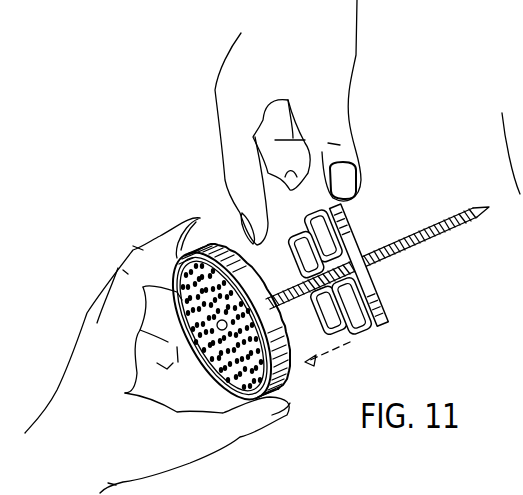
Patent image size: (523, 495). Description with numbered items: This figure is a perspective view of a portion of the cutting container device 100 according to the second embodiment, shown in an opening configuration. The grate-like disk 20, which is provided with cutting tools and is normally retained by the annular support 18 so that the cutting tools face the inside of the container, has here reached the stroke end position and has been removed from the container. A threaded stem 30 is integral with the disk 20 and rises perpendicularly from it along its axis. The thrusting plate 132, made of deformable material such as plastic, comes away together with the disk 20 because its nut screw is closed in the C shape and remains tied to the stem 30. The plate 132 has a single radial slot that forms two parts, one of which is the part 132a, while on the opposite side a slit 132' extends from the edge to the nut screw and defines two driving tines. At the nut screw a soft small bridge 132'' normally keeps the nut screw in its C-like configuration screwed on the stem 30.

The cutting container device 100 is at (193, 173).
The disk 20 is at (172, 255).
The threaded stem 30 is at (462, 229).
The thrusting plate 132 is at (359, 285).
The slit 132' is at (367, 214).
The soft small bridge 132'' is at (392, 280).
The part of the plate 132a is at (521, 284).
The annular support 18 is at (290, 383).